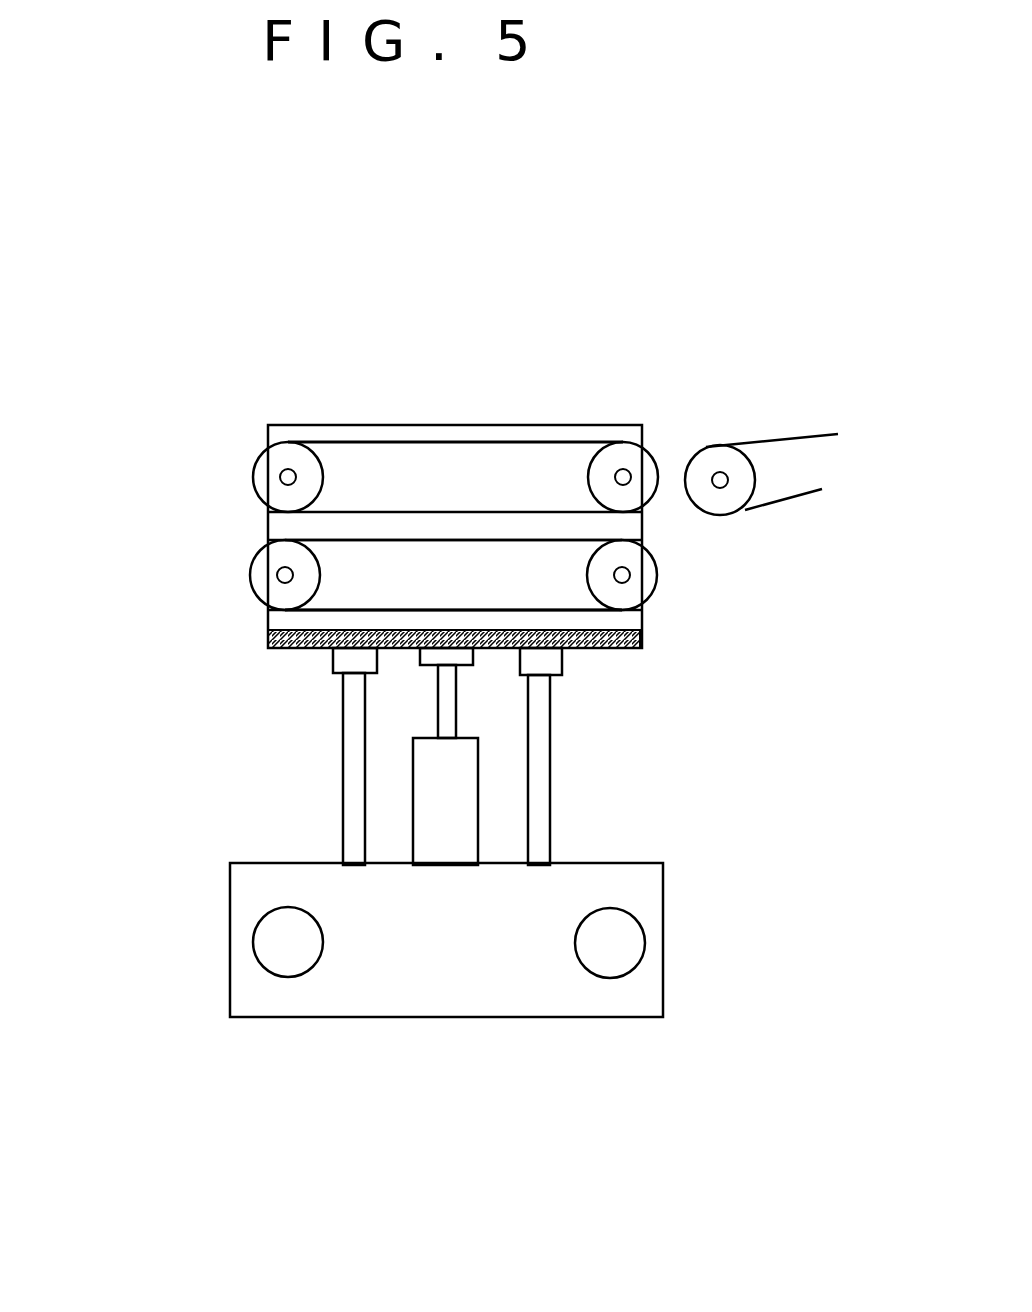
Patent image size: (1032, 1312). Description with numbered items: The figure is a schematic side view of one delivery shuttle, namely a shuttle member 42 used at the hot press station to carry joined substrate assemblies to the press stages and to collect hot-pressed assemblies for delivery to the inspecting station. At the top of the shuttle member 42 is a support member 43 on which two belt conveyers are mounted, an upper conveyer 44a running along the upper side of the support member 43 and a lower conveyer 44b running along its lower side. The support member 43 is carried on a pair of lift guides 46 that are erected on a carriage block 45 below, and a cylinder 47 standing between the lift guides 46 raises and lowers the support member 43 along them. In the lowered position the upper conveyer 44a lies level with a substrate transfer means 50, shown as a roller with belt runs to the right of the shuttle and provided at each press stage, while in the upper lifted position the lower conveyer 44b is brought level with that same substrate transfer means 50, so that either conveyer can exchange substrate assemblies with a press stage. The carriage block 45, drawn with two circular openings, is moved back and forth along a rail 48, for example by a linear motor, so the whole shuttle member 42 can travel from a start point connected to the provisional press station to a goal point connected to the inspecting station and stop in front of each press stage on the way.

The shuttle member 42 is at (238, 460).
The support member 43 is at (642, 643).
The upper conveyer 44a is at (427, 447).
The lower conveyer 44b is at (503, 543).
The carriage block 45 is at (500, 1000).
The lift guides 46 is at (350, 765).
The cylinder 47 is at (440, 810).
The rail 48 is at (282, 958).
The substrate transfer means 50 is at (767, 440).